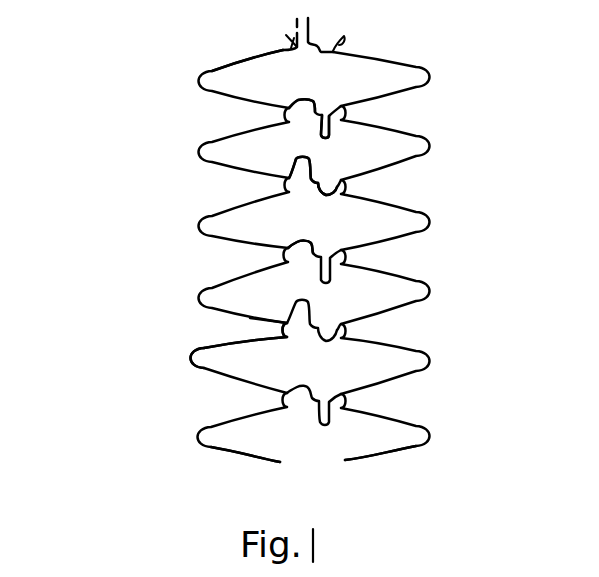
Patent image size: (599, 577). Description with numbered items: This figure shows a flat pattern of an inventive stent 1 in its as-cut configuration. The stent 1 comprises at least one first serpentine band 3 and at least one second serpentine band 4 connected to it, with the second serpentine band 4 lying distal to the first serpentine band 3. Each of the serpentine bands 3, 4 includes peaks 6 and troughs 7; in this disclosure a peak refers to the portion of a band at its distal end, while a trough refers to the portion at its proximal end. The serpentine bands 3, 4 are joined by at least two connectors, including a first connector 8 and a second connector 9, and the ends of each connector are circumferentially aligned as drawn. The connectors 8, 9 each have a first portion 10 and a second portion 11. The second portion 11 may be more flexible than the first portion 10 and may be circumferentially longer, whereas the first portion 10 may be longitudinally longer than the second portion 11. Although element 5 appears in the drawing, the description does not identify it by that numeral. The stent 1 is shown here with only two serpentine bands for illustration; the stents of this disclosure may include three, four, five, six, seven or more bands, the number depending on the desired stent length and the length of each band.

The stent 1 is at (110, 76).
The first serpentine band 3 is at (227, 483).
The second serpentine band 4 is at (405, 474).
The spinous process 5 is at (290, 174).
The peaks 6 is at (287, 353).
The troughs 7 is at (190, 372).
The first connector 8 is at (308, 218).
The second connector 9 is at (306, 84).
The first portion 10 is at (322, 100).
The second portion 11 is at (164, 228).